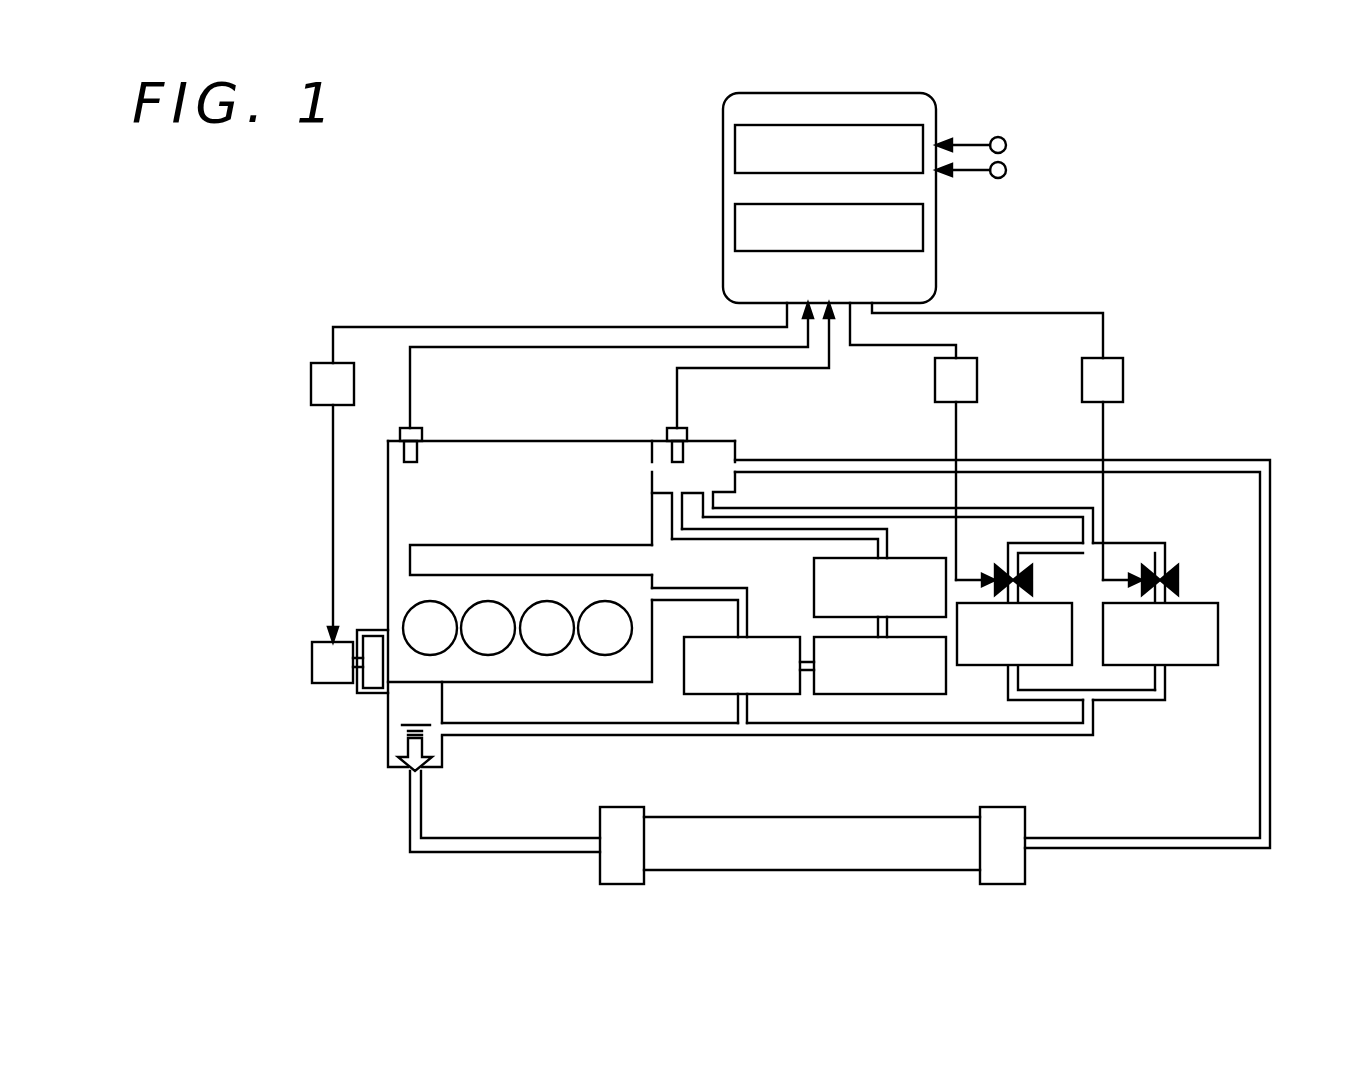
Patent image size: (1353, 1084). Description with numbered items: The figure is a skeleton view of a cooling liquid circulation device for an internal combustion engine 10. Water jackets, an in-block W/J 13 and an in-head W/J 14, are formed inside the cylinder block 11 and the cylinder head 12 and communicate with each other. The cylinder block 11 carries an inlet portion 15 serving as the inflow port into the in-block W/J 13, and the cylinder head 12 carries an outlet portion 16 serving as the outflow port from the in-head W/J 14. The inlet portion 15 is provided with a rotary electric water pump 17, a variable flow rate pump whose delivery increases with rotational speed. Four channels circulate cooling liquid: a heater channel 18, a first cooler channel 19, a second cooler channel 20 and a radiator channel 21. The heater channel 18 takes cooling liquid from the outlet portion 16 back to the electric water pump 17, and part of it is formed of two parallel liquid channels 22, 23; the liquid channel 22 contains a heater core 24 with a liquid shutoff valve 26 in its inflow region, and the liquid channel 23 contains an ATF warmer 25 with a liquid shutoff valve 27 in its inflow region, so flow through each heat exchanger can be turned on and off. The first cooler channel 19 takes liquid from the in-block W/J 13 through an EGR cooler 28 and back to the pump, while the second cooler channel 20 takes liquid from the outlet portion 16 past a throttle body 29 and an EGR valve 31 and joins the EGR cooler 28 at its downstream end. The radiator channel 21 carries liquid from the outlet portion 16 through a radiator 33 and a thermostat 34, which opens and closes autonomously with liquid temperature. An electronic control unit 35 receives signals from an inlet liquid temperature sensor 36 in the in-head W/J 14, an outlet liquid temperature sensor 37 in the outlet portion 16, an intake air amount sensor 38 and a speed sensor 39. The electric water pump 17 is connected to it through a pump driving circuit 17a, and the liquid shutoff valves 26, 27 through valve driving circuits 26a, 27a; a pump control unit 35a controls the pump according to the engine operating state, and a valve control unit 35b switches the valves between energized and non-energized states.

The internal combustion engine 10 is at (471, 426).
The cylinder block 11 is at (566, 684).
The cylinder head 12 is at (588, 440).
The in-block W/J 13 is at (517, 613).
The in-head W/J 14 is at (531, 526).
The inlet portion 15 is at (388, 718).
The outlet portion 16 is at (738, 445).
The electric water pump 17 is at (311, 662).
The pump driving circuit 17a is at (311, 384).
The heater channel 18 is at (893, 500).
The first cooler channel 19 is at (668, 598).
The second cooler channel 20 is at (768, 542).
The radiator channel 21 is at (905, 459).
The liquid channel 22 is at (1042, 539).
The liquid channel 23 is at (1148, 544).
The heater core 24 is at (978, 667).
The ATF warmer 25 is at (1196, 667).
The liquid shutoff valve 26 is at (1034, 580).
The valve driving circuit 26a is at (977, 380).
The liquid shutoff valve 27 is at (1180, 580).
The valve driving circuit 27a is at (1123, 380).
The EGR cooler 28 is at (772, 697).
The throttle body 29 is at (896, 556).
The EGR valve 31 is at (888, 697).
The radiator 33 is at (890, 872).
The thermostat 34 is at (432, 745).
The electronic control unit 35 is at (796, 198).
The pump control unit 35a is at (863, 119).
The valve control unit 35b is at (863, 197).
The inlet liquid temperature sensor 36 is at (398, 432).
The outlet liquid temperature sensor 37 is at (690, 432).
The intake air amount sensor 38 is at (1007, 145).
The speed sensor 39 is at (1007, 170).